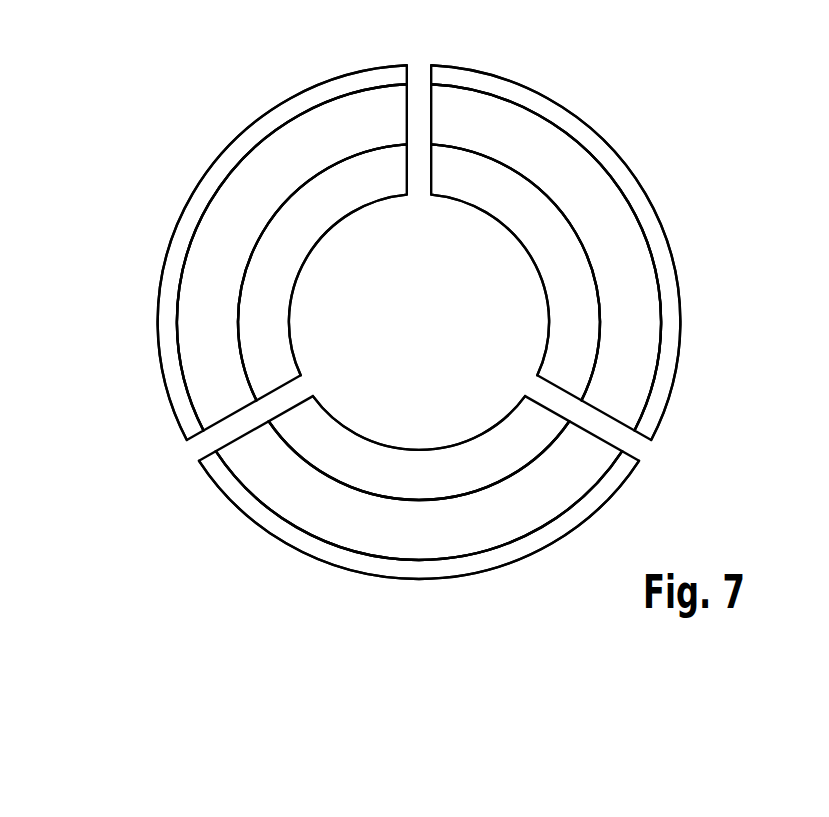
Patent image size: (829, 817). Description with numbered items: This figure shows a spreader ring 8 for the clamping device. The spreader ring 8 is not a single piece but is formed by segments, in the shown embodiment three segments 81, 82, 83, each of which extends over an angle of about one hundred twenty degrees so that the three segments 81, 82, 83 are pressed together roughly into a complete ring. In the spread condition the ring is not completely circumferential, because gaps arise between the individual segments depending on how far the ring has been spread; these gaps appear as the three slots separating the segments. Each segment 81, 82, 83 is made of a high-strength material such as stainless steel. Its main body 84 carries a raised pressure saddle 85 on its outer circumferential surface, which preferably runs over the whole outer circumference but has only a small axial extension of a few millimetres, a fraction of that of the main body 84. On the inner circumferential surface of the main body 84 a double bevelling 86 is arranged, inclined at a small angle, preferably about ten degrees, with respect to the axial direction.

The spreader ring 8 is at (398, 343).
The first segment 81 is at (343, 127).
The second segment 82 is at (495, 127).
The third segment 83 is at (425, 538).
The main body 84 is at (193, 322).
The pressure saddle 85 is at (172, 281).
The double bevelling 86 is at (258, 360).